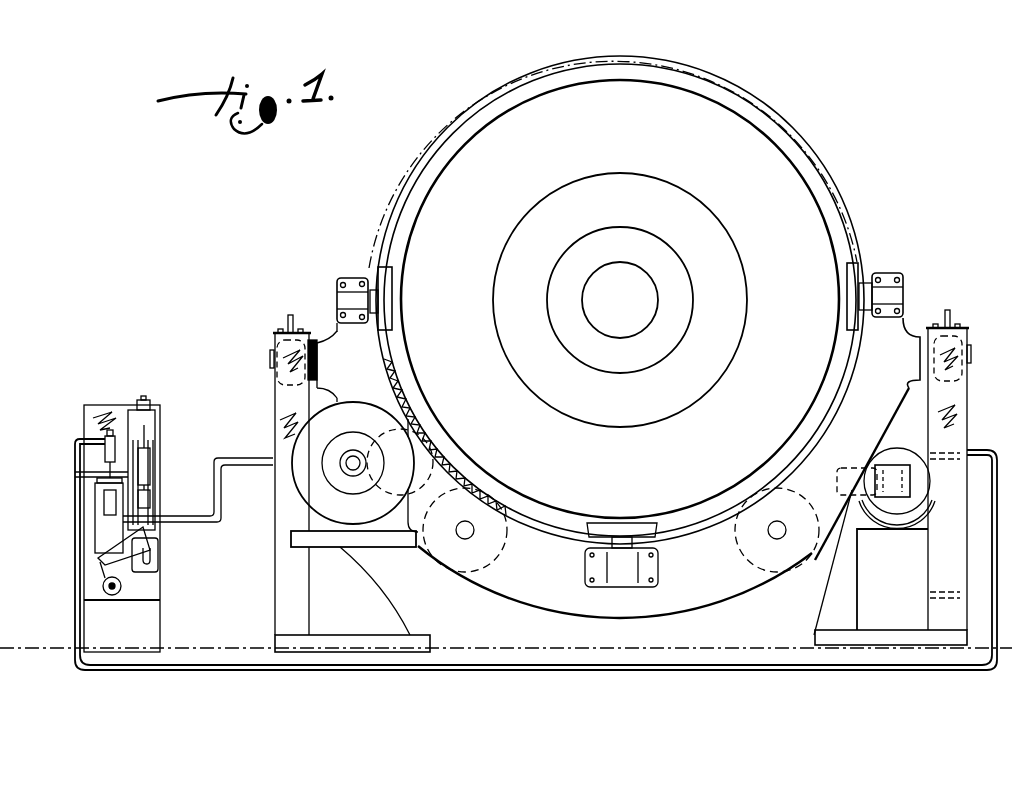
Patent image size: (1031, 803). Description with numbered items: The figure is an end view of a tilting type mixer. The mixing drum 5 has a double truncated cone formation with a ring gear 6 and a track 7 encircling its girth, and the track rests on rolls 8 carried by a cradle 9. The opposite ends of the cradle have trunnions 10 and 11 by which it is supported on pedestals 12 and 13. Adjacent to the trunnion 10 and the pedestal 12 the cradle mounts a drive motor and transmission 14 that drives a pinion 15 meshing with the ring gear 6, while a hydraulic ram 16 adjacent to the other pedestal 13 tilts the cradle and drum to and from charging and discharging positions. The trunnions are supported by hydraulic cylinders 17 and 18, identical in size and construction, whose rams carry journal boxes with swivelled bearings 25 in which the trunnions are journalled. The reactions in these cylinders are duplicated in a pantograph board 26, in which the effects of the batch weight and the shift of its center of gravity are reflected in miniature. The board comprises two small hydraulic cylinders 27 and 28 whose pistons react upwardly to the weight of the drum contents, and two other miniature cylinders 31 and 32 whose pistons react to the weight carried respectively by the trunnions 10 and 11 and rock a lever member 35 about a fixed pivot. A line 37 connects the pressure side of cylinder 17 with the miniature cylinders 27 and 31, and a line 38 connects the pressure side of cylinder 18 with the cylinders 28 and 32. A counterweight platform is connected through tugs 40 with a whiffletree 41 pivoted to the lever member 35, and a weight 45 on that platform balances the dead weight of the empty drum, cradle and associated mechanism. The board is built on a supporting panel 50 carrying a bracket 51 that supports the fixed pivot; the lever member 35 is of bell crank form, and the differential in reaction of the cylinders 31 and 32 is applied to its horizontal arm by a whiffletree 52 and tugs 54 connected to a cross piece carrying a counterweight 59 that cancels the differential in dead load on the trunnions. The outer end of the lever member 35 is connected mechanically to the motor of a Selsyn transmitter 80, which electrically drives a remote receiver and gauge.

The mixing drum 5 is at (758, 181).
The ring gear 6 is at (470, 98).
The track 7 is at (738, 97).
The rolls 8 is at (505, 511).
The cradle 9 is at (865, 392).
The trunnion 10 is at (316, 355).
The trunnion 11 is at (941, 330).
The pedestal 12 is at (275, 401).
The pedestal 13 is at (968, 402).
The drive motor and transmission 14 is at (372, 512).
The pinion 15 is at (420, 448).
The hydraulic ram 16 is at (888, 458).
The hydraulic cylinder 17 is at (275, 424).
The hydraulic cylinder 18 is at (967, 432).
The bearings 25 is at (275, 380).
The pantograph board 26 is at (165, 395).
The hydraulic cylinder 27 is at (151, 500).
The hydraulic cylinder 28 is at (155, 454).
The miniature cylinder 31 is at (105, 513).
The miniature cylinder 32 is at (105, 448).
The lever member 35 is at (150, 552).
The line 37 is at (221, 493).
The line 38 is at (85, 613).
The tugs 40 is at (156, 474).
The whiffletree 41 is at (155, 535).
The weight 45 is at (137, 418).
The supporting panel 50 is at (100, 406).
The bracket 51 is at (155, 572).
The whiffletree 52 is at (100, 560).
The tugs 54 is at (98, 538).
The counterweight 59 is at (100, 484).
The Selsyn transmitter 80 is at (117, 598).